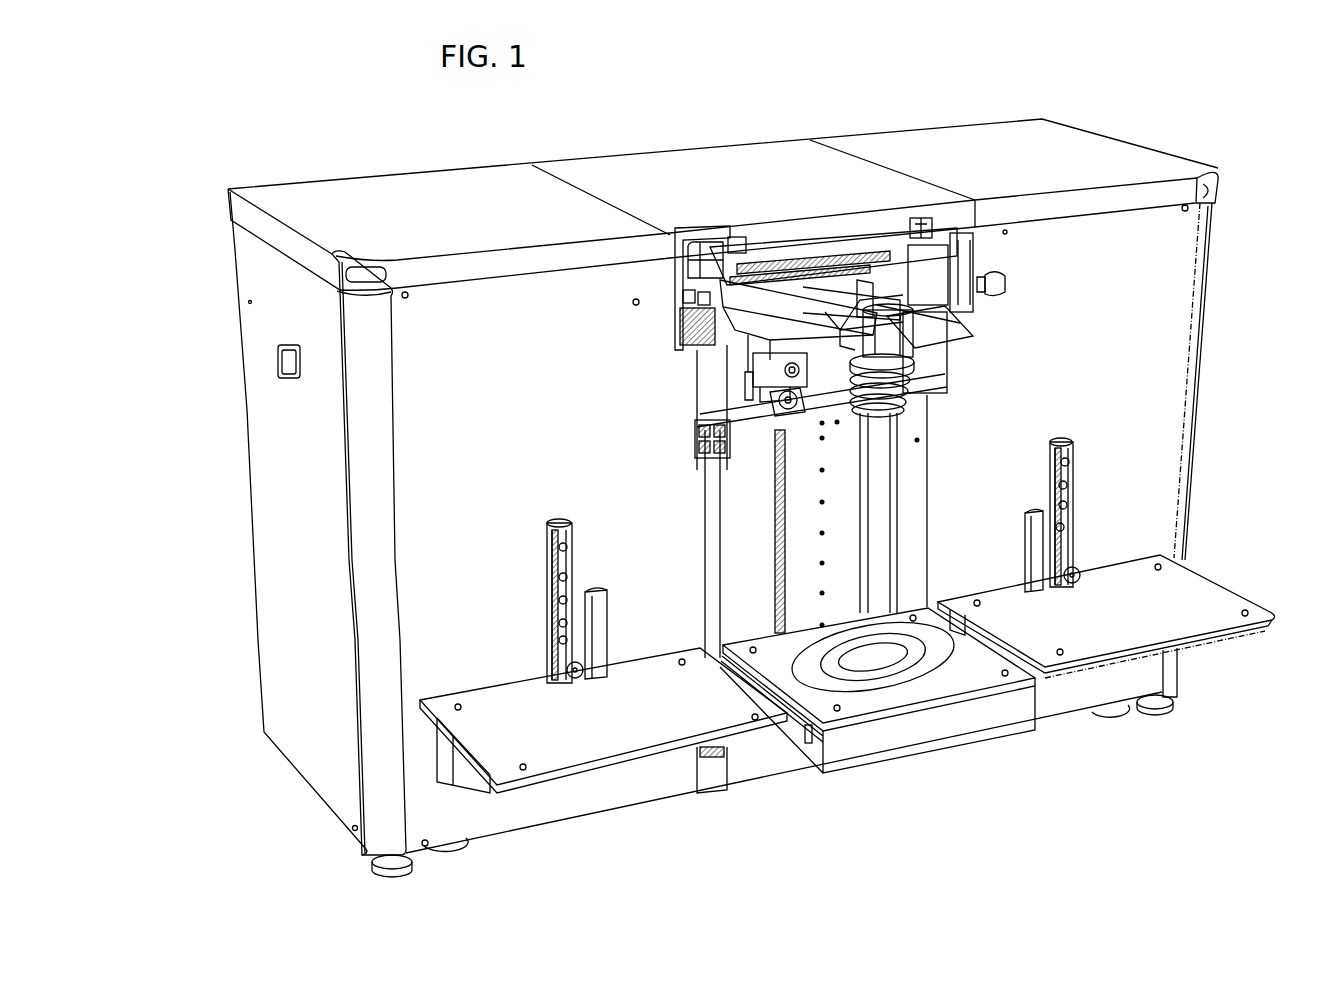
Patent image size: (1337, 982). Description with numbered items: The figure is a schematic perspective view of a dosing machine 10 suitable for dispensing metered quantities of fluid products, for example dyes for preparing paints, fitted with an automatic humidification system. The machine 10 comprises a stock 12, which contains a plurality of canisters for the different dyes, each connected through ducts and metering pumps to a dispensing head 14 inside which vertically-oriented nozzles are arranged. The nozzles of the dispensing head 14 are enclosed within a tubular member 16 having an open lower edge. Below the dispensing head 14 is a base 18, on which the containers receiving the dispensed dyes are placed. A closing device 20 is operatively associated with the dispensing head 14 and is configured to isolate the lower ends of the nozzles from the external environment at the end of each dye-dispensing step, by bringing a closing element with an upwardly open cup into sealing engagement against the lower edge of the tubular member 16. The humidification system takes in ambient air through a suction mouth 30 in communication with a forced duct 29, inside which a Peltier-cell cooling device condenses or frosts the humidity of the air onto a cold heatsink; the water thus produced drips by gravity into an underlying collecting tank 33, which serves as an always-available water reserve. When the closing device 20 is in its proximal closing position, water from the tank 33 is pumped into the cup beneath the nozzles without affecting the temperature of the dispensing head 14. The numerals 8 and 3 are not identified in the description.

The dosing machine 10 is at (753, 126).
The stock 12 is at (1179, 283).
The dispensing head 14 is at (925, 362).
The tubular member 16 is at (880, 380).
The base 18 is at (873, 697).
The closing device 20 is at (907, 406).
The forced duct 29 is at (763, 250).
The suction mouth 30 is at (722, 340).
The collecting tank 33 is at (768, 373).
The roller mount 8 is at (806, 405).
The roller 3 is at (810, 408).